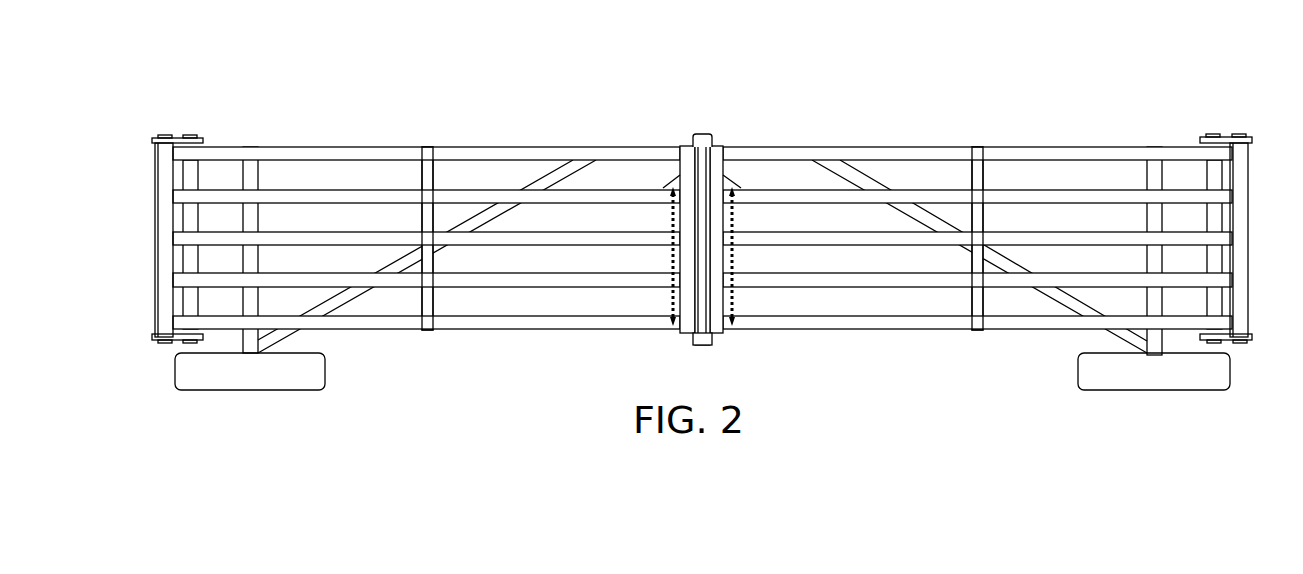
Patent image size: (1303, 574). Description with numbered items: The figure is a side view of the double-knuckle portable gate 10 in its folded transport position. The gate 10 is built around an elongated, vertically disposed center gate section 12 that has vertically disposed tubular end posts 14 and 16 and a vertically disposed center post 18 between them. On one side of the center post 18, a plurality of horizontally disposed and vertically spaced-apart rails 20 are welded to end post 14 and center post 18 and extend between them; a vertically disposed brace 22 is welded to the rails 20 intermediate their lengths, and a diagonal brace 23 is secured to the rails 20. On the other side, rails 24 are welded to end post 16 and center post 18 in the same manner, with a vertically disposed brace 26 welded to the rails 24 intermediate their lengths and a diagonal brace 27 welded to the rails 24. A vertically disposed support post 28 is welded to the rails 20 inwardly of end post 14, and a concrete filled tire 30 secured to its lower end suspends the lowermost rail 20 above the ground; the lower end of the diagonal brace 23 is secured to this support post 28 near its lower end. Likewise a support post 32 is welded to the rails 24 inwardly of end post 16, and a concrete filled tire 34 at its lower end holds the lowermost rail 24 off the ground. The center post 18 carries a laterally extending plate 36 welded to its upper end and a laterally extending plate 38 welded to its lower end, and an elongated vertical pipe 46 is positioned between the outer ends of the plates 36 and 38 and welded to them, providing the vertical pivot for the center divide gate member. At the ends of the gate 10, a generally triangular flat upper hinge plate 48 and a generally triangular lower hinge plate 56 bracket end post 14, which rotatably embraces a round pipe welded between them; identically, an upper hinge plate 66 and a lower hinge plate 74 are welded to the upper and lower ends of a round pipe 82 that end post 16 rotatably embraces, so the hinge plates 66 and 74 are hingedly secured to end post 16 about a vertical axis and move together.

The double-knuckle portable gate 10 is at (819, 123).
The center gate section 12 is at (426, 185).
The end post 14 is at (192, 222).
The end post 16 is at (1210, 263).
The center post 18 is at (706, 191).
The rails 20 is at (372, 146).
The vertically disposed brace 22 is at (428, 218).
The diagonal brace 23 is at (352, 300).
The rails 24 is at (947, 330).
The vertically disposed brace 26 is at (982, 180).
The diagonal brace 27 is at (870, 194).
The support post 28 is at (250, 178).
The concrete filled tire 30 is at (225, 382).
The support post 32 is at (1151, 178).
The concrete filled tire 34 is at (1095, 382).
The laterally extending plate 36 is at (707, 134).
The laterally extending plate 38 is at (708, 344).
The pipe 46 is at (698, 345).
The upper hinge plate 48 is at (179, 131).
The lower hinge plate 56 is at (172, 348).
The upper hinge plate 66 is at (1225, 131).
The lower hinge plate 74 is at (1233, 349).
The pipe 82 is at (1213, 134).